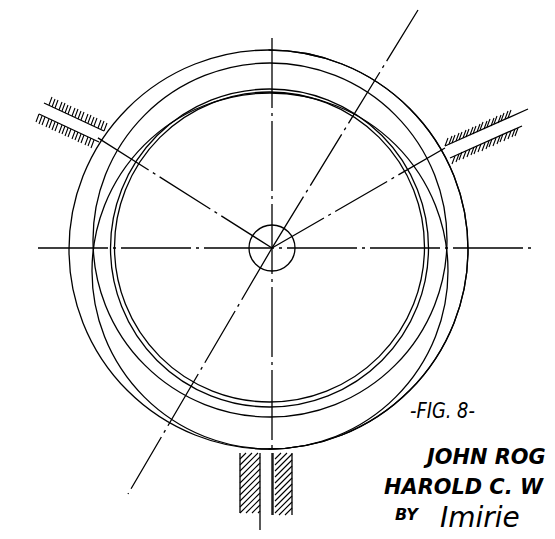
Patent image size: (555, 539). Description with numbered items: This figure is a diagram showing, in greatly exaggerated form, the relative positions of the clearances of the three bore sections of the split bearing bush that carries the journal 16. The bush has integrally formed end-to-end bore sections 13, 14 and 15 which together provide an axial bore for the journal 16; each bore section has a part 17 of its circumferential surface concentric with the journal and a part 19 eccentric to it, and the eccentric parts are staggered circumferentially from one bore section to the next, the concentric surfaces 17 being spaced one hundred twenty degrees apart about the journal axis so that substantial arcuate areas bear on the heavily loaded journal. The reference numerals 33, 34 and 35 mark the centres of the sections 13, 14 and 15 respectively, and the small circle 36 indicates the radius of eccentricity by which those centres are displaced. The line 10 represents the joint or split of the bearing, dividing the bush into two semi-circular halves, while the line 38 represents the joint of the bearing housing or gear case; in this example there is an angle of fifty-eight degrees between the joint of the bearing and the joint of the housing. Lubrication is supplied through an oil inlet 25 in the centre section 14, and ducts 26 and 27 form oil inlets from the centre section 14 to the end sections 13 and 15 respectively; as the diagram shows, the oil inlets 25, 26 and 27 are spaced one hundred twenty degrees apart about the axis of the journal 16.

The split of the bearing bush 10 is at (408, 32).
The bore section 13 is at (412, 105).
The centre bore section 14 is at (167, 73).
The bore section 15 is at (325, 442).
The journal 16 is at (380, 337).
The concentric bore surface part 17 is at (302, 90).
The eccentric bore surface part 19 is at (145, 100).
The oil inlet 25 is at (65, 127).
The duct 26 is at (475, 152).
The duct 27 is at (268, 483).
The centre of section 13 33 is at (272, 248).
The centre of section 14 34 is at (256, 236).
The centre of section 15 35 is at (272, 273).
The circle of eccentricity 36 is at (250, 265).
The joint of the bearing housing 38 is at (495, 248).